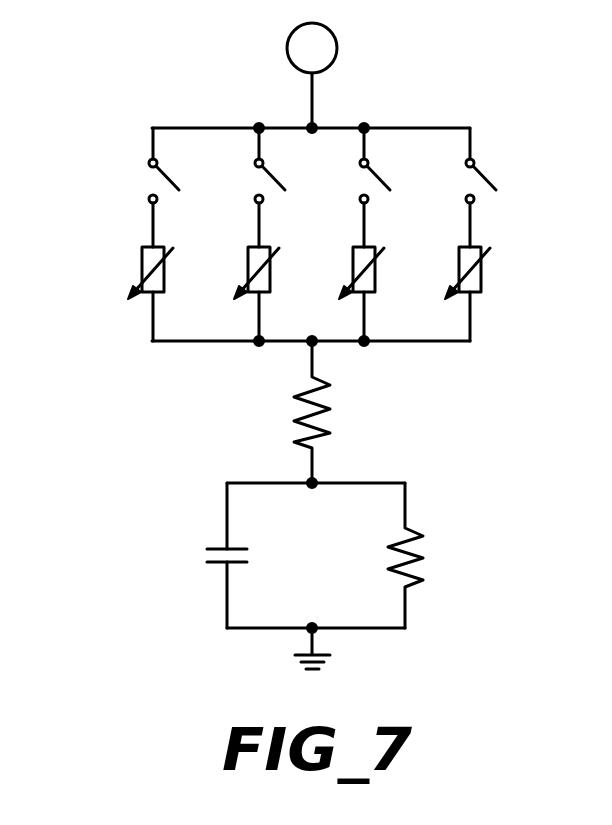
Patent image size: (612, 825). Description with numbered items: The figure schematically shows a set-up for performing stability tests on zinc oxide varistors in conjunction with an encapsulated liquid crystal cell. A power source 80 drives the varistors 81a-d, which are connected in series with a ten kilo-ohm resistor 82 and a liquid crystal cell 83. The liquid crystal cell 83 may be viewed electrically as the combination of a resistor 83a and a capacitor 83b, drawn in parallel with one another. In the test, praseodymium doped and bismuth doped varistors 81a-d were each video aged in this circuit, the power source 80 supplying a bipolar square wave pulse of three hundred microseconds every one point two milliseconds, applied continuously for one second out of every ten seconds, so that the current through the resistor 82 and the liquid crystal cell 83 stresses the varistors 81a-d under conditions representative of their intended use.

The power source 80 is at (338, 50).
The varistors 81a-d is at (142, 268).
The resistor 82 is at (298, 432).
The liquid crystal cell 83 is at (319, 542).
The resistor 83a is at (413, 575).
The capacitor 83b is at (218, 566).